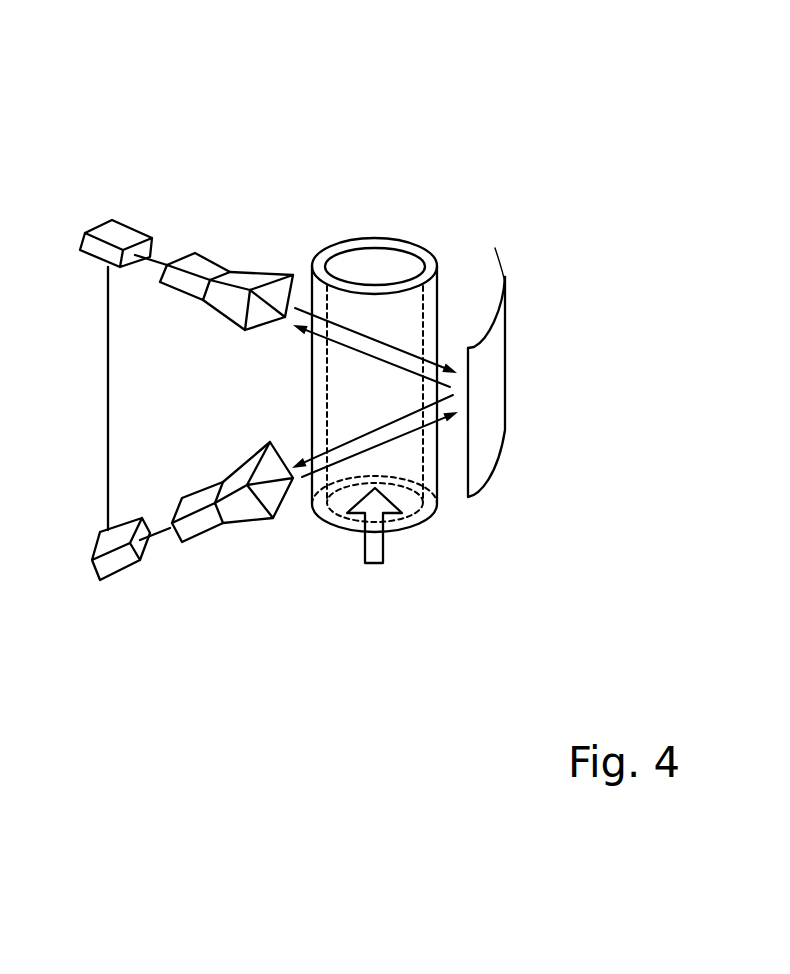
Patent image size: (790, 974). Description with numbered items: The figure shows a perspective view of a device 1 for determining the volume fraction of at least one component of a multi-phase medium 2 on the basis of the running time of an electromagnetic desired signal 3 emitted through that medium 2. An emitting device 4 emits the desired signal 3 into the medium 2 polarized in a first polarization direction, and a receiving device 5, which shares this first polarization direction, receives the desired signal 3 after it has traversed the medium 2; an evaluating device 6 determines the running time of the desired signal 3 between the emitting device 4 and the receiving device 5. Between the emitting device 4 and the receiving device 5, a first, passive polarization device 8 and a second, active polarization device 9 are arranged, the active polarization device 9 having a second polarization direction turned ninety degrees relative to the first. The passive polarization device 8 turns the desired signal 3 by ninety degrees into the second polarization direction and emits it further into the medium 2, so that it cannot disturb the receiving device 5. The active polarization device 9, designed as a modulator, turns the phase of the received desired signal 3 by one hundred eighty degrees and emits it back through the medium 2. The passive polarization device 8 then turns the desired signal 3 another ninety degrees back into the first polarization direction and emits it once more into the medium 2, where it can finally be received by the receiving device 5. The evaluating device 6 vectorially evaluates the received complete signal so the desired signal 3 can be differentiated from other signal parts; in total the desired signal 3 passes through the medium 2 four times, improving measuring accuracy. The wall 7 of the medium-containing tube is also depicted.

The device 1 is at (307, 121).
The multi-phase medium 2 is at (334, 507).
The desired signal 3 is at (350, 330).
The emitting device 4 is at (216, 588).
The receiving device 5 is at (205, 545).
The evaluating device 6 is at (130, 568).
The tube wall / rim 7 is at (428, 257).
The first, passive polarization device 8 is at (495, 378).
The second, active polarization device 9 is at (175, 232).